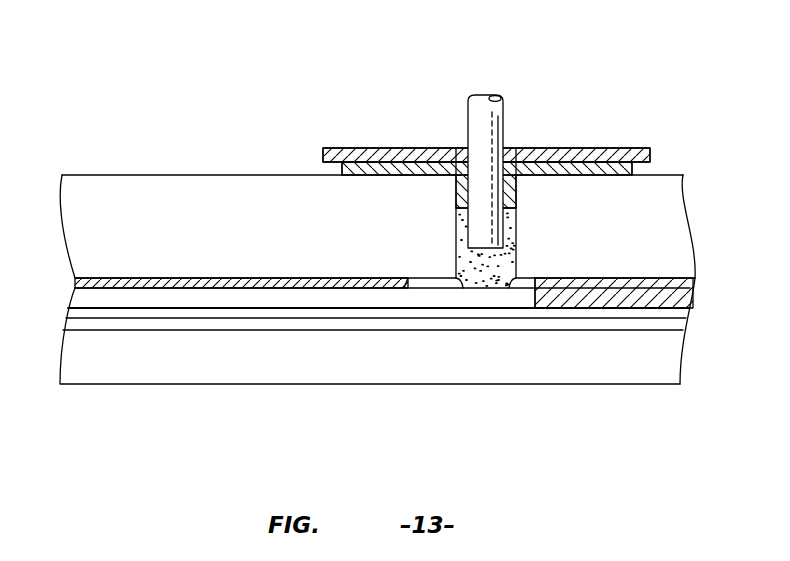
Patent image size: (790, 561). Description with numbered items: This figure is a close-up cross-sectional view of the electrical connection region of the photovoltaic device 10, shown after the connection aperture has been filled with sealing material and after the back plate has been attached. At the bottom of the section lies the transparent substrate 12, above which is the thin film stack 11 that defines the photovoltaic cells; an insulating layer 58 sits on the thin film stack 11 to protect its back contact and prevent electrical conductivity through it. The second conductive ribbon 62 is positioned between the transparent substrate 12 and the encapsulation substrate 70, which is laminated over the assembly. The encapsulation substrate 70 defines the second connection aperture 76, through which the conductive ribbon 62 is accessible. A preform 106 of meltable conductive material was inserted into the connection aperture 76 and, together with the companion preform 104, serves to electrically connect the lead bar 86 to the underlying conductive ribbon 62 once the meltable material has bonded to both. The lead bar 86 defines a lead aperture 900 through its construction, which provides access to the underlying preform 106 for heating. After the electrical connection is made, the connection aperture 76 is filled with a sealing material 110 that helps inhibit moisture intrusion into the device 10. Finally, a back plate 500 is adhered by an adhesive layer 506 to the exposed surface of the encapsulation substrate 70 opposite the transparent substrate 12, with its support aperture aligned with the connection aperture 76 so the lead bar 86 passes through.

The photovoltaic device 10 is at (162, 143).
The thin film stack 11 is at (135, 322).
The transparent substrate 12 is at (553, 370).
The insulating layer 58 is at (672, 293).
The second conductive ribbon 62 is at (195, 300).
The encapsulation substrate 70 is at (656, 190).
The second connection aperture 76 is at (460, 143).
The second lead bar 86 is at (498, 112).
The first preform 104 is at (512, 140).
The second preform 106 is at (507, 233).
The sealing material 110 is at (508, 193).
The back plate 500 is at (613, 152).
The adhesive layer 506 is at (577, 163).
The lead aperture 900 is at (487, 80).